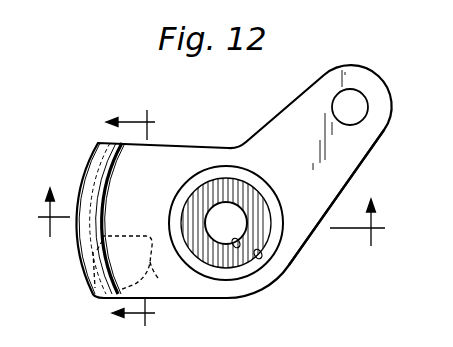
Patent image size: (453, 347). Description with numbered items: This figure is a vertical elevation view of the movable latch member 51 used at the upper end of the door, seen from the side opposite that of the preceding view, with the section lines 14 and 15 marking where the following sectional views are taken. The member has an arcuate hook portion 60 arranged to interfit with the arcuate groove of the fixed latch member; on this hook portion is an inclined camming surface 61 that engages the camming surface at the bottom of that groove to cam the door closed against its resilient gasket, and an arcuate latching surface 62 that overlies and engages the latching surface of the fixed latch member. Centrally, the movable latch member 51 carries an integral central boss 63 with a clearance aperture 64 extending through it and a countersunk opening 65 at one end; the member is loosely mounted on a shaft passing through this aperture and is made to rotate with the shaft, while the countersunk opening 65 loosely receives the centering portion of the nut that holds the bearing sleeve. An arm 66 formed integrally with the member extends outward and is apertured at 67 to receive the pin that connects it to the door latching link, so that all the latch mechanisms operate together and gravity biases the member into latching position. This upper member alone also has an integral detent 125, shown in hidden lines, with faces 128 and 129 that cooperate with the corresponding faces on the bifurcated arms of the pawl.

The section line 14- 14 is at (215, 217).
The section line 15- 15 is at (143, 218).
The movable latch member 51 is at (241, 110).
The arcuate hook portion 60 is at (123, 161).
The inclined camming surface 61 is at (96, 150).
The arcuate latching surface 62 is at (108, 190).
The central boss 63 is at (280, 246).
The clearance aperture 64 is at (237, 248).
The countersunk opening 65 is at (261, 259).
The arm 66 is at (359, 160).
The aperture 67 is at (356, 98).
The detent 125 is at (152, 270).
The face 128 is at (97, 270).
The face 129 is at (97, 250).